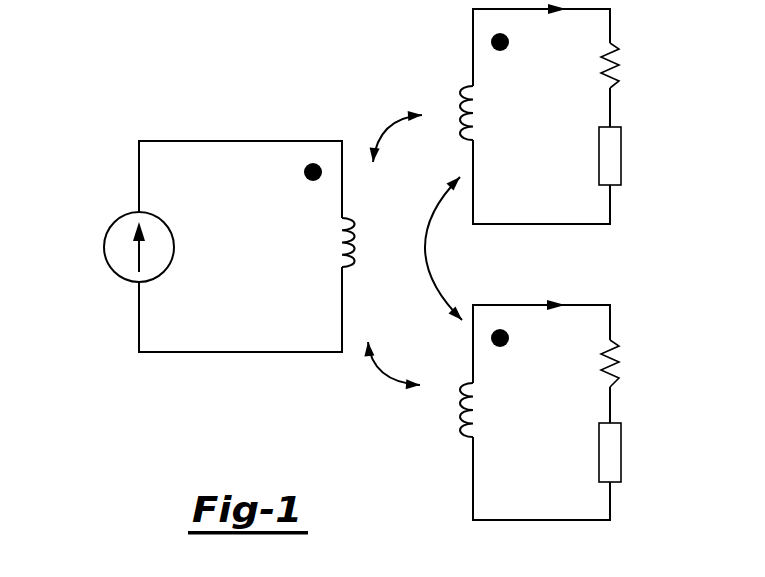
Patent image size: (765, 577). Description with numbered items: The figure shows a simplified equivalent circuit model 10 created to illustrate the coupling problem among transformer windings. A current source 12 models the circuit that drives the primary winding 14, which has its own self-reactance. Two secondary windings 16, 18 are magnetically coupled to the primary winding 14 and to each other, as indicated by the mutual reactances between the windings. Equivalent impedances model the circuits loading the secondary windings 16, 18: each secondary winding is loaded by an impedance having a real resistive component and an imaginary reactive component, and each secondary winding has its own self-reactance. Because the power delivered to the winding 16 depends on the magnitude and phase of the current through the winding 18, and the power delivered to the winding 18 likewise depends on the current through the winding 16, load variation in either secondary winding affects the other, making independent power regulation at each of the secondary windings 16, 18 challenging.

The simplified equivalent circuit model 10 is at (104, 62).
The current source 12 is at (125, 216).
The primary winding 14 is at (350, 218).
The secondary winding 16 is at (461, 86).
The secondary winding 18 is at (461, 383).